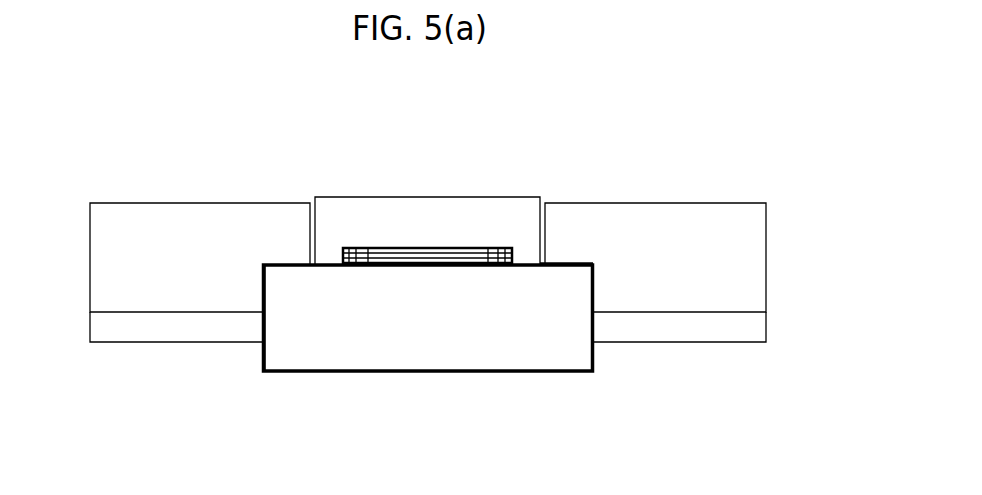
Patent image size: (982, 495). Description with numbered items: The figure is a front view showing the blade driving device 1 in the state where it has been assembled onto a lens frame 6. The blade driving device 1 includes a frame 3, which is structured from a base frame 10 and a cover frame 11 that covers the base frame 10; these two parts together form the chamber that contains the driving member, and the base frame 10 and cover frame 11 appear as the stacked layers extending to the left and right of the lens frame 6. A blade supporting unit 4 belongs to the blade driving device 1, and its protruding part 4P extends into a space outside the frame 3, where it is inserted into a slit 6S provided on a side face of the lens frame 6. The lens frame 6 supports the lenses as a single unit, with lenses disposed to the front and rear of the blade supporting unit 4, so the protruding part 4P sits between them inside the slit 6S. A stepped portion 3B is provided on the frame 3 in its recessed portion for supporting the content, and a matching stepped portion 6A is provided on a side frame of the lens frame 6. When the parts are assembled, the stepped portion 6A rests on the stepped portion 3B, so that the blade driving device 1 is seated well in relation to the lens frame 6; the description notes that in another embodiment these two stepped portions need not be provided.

The blade driving device 1 is at (699, 170).
The frame 3 is at (482, 272).
The stepped portion 3B is at (288, 268).
The blade supporting unit 4 is at (427, 202).
The protruding part 4P is at (392, 248).
The lens frame 6 is at (430, 292).
The stepped portion 6A is at (584, 259).
The slit 6S is at (468, 254).
The base frame 10 is at (767, 250).
The cover frame 11 is at (460, 311).